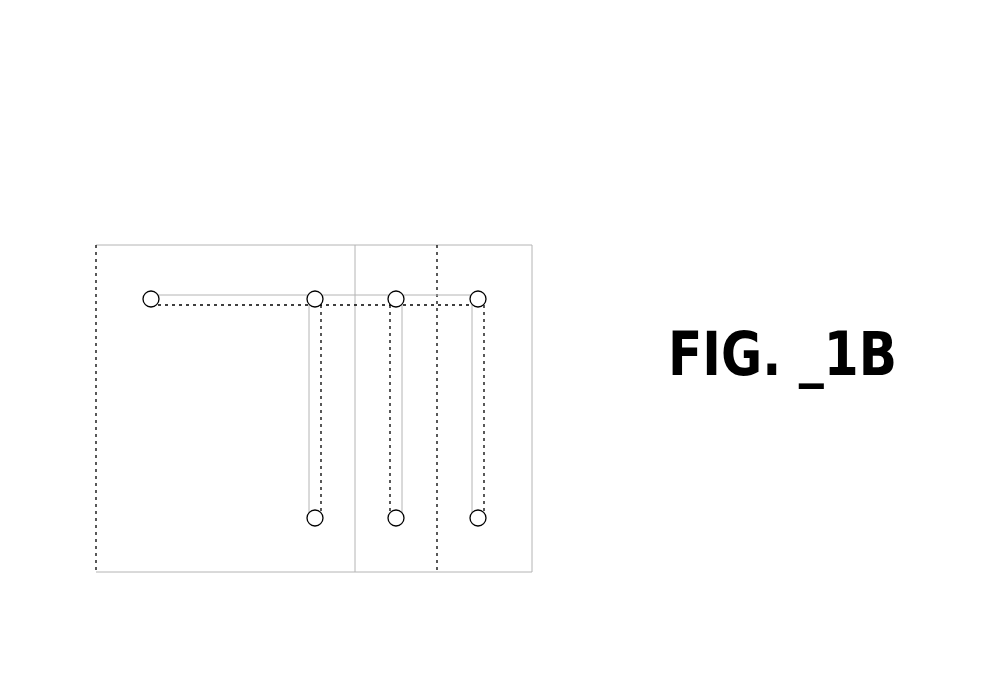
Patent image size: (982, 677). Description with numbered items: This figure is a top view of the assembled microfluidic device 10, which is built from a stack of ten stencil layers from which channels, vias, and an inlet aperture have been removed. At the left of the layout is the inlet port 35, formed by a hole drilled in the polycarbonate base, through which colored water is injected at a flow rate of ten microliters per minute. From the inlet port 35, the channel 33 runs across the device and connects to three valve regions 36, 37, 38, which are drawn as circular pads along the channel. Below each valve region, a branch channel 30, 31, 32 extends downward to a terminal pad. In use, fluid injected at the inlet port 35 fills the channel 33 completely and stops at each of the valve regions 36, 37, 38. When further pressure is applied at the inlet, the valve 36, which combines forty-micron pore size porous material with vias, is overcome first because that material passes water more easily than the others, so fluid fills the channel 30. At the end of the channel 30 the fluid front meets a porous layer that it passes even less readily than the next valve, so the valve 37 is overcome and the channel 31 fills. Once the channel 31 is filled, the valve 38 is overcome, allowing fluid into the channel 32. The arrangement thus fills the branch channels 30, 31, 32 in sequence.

The microfluidic device 10 is at (78, 81).
The channel 30 is at (320, 502).
The channel 31 is at (402, 503).
The channel 32 is at (485, 503).
The channel 33 is at (216, 293).
The inlet port 35 is at (143, 295).
The valve 36 is at (310, 293).
The valve 37 is at (399, 293).
The valve 38 is at (486, 296).